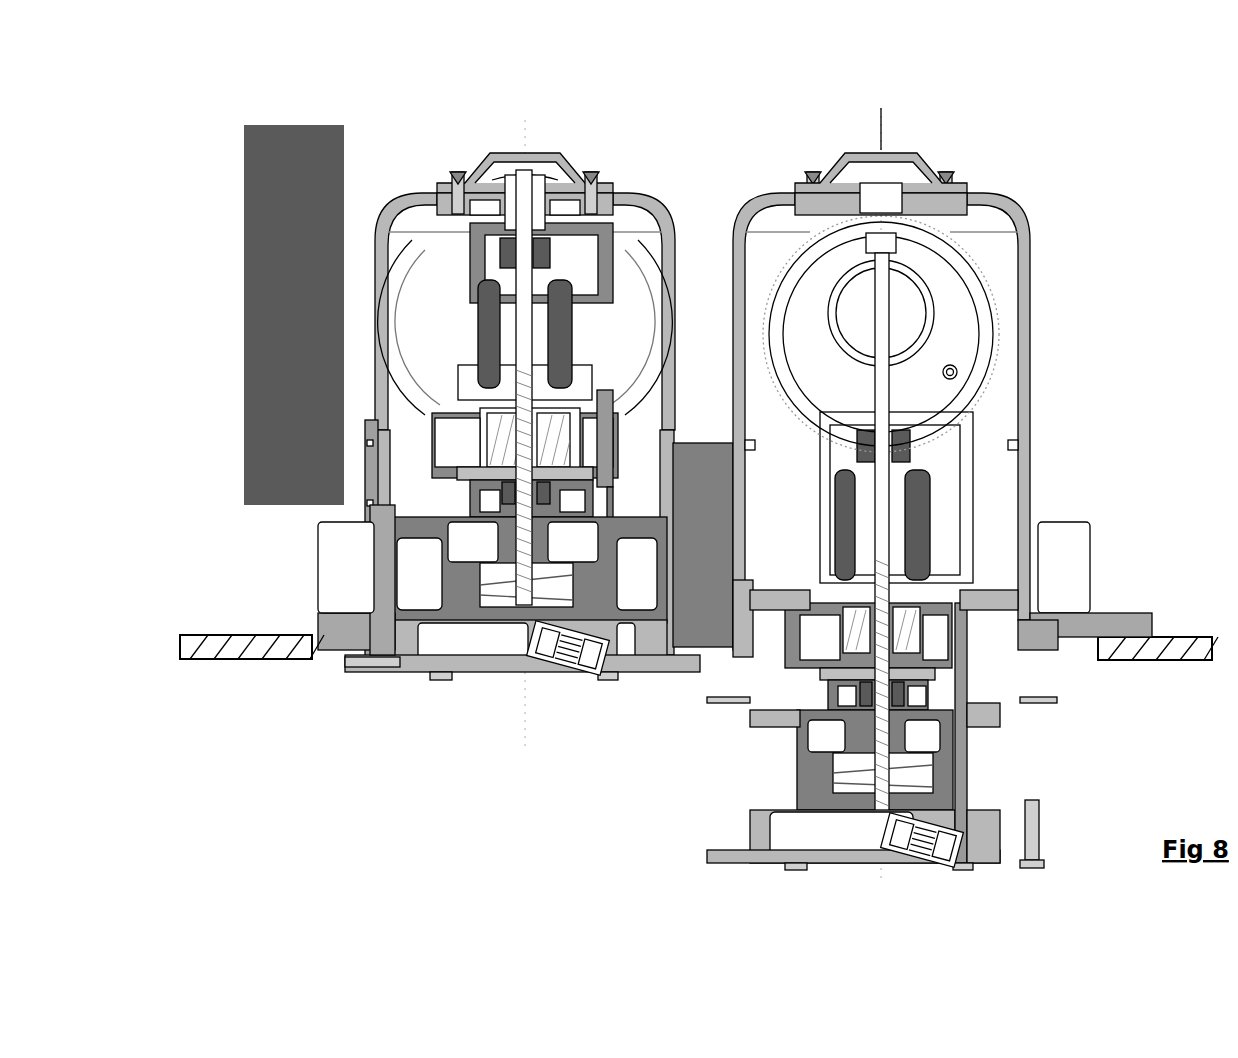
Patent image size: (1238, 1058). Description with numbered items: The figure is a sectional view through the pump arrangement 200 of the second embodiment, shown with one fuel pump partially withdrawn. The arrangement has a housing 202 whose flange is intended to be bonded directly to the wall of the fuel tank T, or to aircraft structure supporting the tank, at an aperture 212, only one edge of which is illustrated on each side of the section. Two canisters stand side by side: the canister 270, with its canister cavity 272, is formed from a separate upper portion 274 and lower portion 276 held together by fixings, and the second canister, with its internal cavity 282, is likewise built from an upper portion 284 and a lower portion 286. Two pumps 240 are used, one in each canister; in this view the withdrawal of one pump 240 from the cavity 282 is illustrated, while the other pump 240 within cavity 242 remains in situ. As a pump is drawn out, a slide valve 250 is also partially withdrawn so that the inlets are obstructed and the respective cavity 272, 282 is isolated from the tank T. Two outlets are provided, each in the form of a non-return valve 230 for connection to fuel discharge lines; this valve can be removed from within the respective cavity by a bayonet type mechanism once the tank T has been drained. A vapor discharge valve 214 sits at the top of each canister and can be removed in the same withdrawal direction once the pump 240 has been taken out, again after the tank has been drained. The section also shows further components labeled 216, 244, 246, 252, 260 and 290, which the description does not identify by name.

The pump arrangement 200 is at (352, 172).
The housing 202 is at (705, 440).
The aperture 212 is at (313, 652).
The vapor discharge valve 214 is at (597, 178).
The screws 216 is at (516, 172).
The non-return valve 230 is at (447, 358).
The pump 240 is at (498, 637).
The cavity 242 is at (489, 575).
The shaft 244 is at (500, 226).
The magnets 246 is at (487, 323).
The slide valve 250 is at (357, 650).
The bearing housing 252 is at (415, 582).
The left mounting block 260 is at (318, 541).
The canister 270 is at (378, 257).
The canister cavity 272 is at (393, 294).
The upper portion 274 is at (438, 192).
The lower portion 276 is at (365, 478).
The internal cavity 282 is at (1002, 354).
The upper portion 284 is at (1025, 262).
The lower portion 286 is at (1035, 503).
The bracket 290 is at (348, 650).
The tank T is at (180, 650).